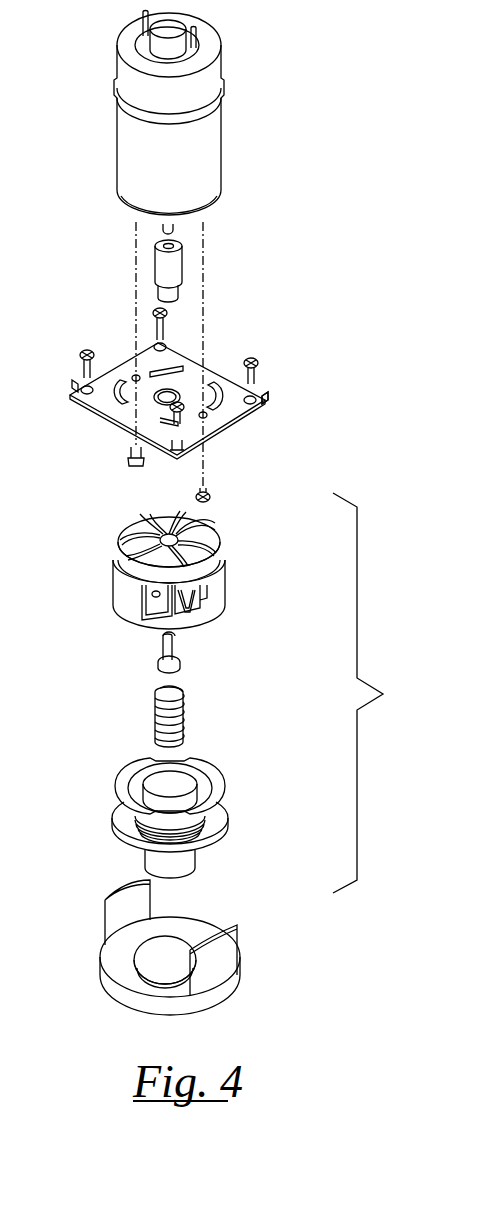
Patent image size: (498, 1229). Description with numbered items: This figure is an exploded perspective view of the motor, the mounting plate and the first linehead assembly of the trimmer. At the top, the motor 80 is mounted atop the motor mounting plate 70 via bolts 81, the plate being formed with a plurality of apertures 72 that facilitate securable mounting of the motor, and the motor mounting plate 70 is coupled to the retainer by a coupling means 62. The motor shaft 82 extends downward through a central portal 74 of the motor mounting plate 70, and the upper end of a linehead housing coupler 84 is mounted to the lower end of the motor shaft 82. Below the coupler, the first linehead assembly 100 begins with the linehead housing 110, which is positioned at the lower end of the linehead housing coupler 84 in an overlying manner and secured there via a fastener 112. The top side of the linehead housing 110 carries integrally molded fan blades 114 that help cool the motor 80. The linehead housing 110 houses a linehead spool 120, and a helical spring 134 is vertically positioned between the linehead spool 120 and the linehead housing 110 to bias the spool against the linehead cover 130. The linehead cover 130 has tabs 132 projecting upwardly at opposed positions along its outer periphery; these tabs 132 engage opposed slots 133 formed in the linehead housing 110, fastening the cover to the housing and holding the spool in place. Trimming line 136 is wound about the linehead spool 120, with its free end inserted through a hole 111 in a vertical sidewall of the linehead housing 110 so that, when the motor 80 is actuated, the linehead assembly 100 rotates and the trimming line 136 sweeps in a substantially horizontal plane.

The motor 80 is at (222, 116).
The motor shaft 82 is at (175, 231).
The linehead housing coupler 84 is at (183, 272).
The motor mounting plate 70 is at (70, 397).
The central portal 74 is at (157, 401).
The coupling means 62 is at (256, 358).
The apertures 72 is at (215, 404).
The bolts 81 is at (208, 494).
The linehead housing 110 is at (183, 571).
The fan blades 114 is at (220, 535).
The hole 111 is at (150, 594).
The slots 133 is at (205, 590).
The fastener 112 is at (162, 650).
The helical spring 134 is at (185, 725).
The linehead spool 120 is at (168, 816).
The trimming line 136 is at (290, 813).
The linehead cover 130 is at (164, 947).
The tabs 132 is at (230, 930).
The first linehead assembly 100 is at (379, 693).